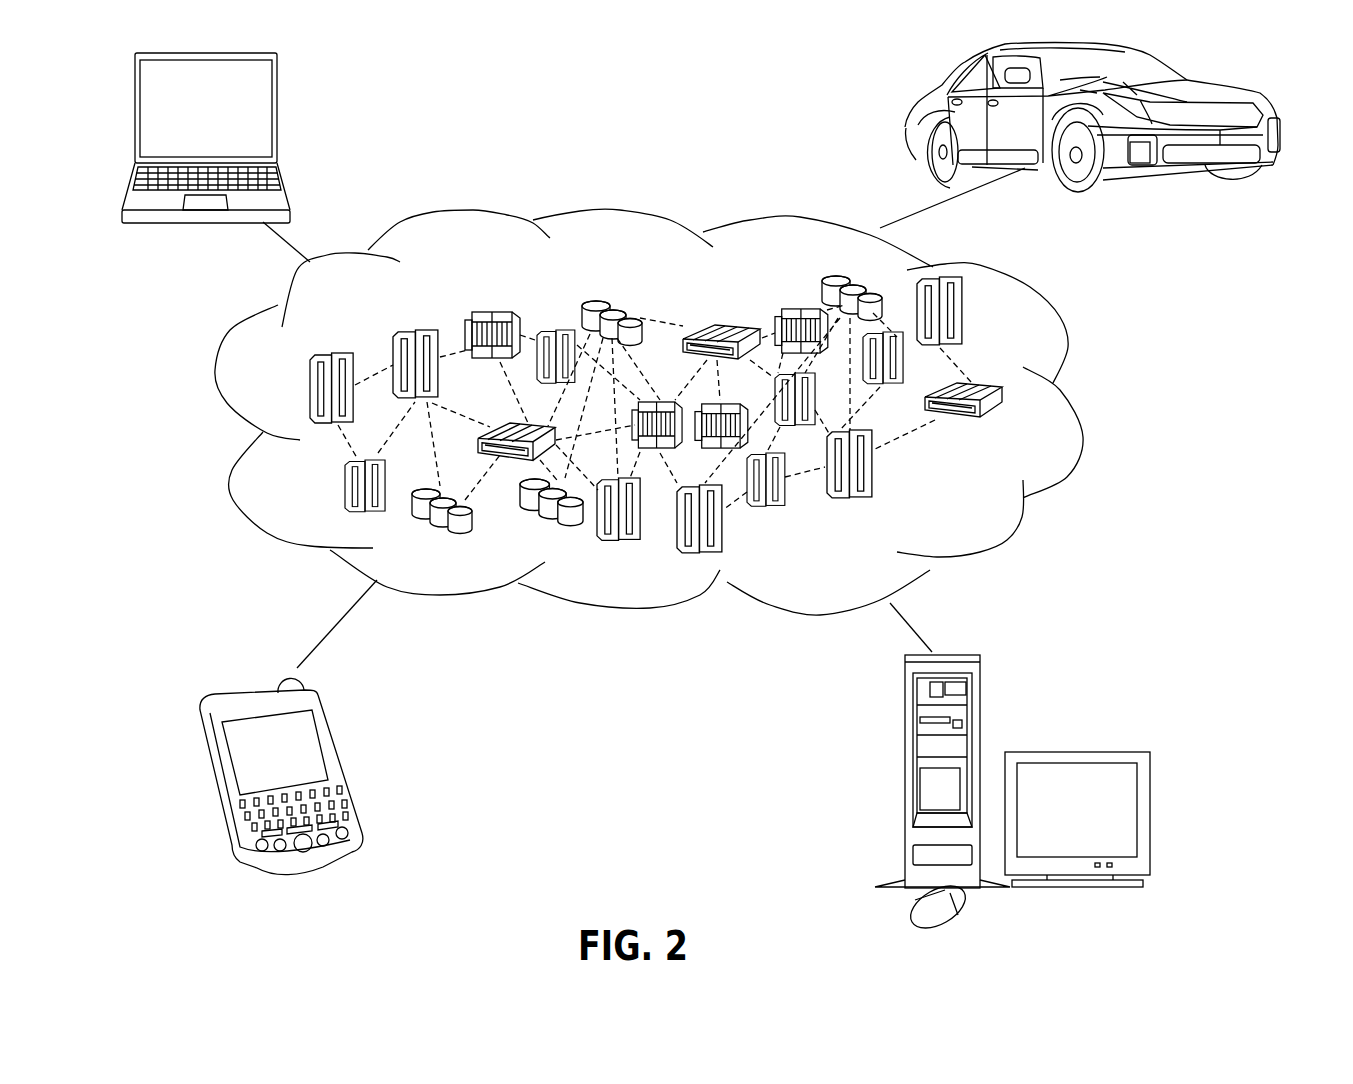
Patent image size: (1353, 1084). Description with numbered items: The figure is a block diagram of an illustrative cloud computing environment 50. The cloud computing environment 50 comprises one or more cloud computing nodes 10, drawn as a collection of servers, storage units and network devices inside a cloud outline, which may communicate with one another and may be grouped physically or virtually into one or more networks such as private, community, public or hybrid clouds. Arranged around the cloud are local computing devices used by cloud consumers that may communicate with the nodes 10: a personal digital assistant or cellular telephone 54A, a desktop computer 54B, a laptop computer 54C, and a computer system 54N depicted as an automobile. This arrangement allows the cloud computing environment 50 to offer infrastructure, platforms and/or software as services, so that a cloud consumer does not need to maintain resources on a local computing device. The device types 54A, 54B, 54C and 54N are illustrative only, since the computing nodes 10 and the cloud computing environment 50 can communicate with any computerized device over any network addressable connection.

The cloud computing nodes 10 is at (988, 507).
The cloud computing environment 50 is at (1077, 402).
The personal digital assistant (PDA) or cellular telephone 54A is at (330, 732).
The desktop computer 54B is at (905, 716).
The laptop computer 54C is at (278, 93).
The computer system 54N is at (918, 108).